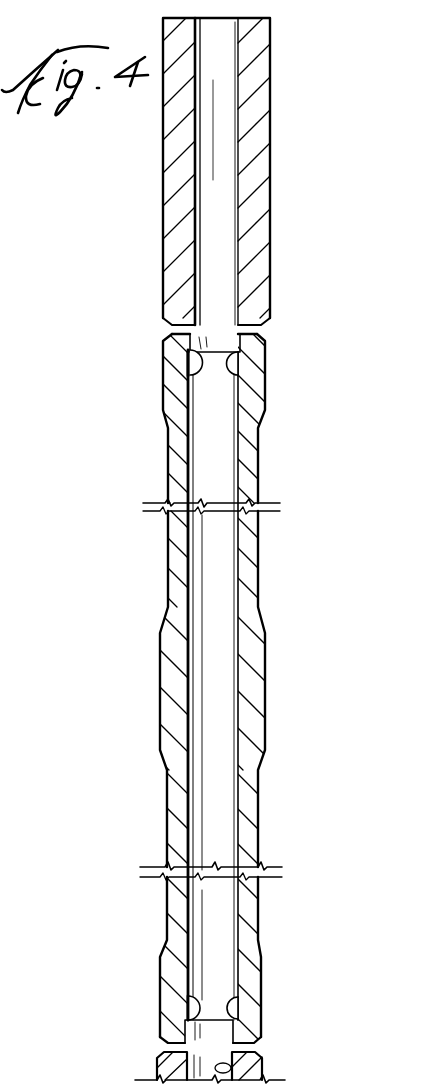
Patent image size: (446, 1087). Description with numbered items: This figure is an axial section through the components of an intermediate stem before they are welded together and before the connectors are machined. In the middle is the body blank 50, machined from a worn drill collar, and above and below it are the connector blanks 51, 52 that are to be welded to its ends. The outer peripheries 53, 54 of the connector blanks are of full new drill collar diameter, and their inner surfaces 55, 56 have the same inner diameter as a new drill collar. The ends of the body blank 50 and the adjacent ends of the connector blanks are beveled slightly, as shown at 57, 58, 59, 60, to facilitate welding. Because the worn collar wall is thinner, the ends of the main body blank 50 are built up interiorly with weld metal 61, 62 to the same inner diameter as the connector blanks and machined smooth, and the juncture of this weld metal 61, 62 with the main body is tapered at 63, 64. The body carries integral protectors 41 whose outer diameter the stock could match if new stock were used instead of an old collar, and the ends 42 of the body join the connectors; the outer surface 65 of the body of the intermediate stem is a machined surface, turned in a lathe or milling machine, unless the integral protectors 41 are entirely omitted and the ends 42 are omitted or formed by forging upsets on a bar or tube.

The protectors 41 is at (266, 688).
The ends 42 is at (260, 412).
The body blank 50 is at (212, 934).
The connector blank 51 is at (212, 171).
The connector blank 52 is at (264, 1076).
The outer periphery 53 is at (270, 262).
The outer periphery 54 is at (209, 1058).
The inner surface 55 is at (234, 169).
The inner surface 56 is at (231, 1064).
The bevel 57 is at (160, 322).
The bevel 58 is at (256, 334).
The bevel 59 is at (158, 1040).
The bevel 60 is at (258, 1052).
The weld metal 61 is at (192, 377).
The weld metal 62 is at (192, 1008).
The taper 63 is at (244, 375).
The taper 64 is at (237, 994).
The outer surface 65 is at (259, 569).